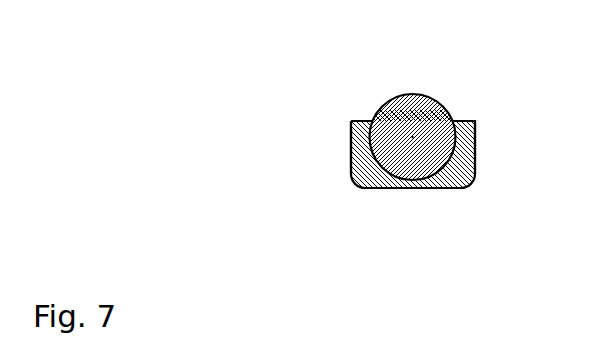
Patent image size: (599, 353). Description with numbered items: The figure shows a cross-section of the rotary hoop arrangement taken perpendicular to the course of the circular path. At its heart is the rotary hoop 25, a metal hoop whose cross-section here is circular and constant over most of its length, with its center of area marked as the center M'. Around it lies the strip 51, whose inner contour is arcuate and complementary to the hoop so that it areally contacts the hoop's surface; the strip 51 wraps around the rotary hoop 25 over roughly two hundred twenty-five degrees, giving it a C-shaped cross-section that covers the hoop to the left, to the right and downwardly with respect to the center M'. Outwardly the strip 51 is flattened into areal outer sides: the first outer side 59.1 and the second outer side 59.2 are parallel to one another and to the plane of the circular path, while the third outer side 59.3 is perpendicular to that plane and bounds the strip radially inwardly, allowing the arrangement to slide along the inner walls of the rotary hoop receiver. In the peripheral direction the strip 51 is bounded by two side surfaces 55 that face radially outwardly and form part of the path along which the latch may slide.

The strip 51 is at (365, 175).
The rotary hoop 25 is at (421, 112).
The center of the cross-section of the rotary hoop M' is at (394, 79).
The side surfaces 55 is at (362, 121).
The first outer side 59.1 is at (350, 150).
The second outer side 59.2 is at (475, 150).
The third outer side 59.3 is at (417, 189).